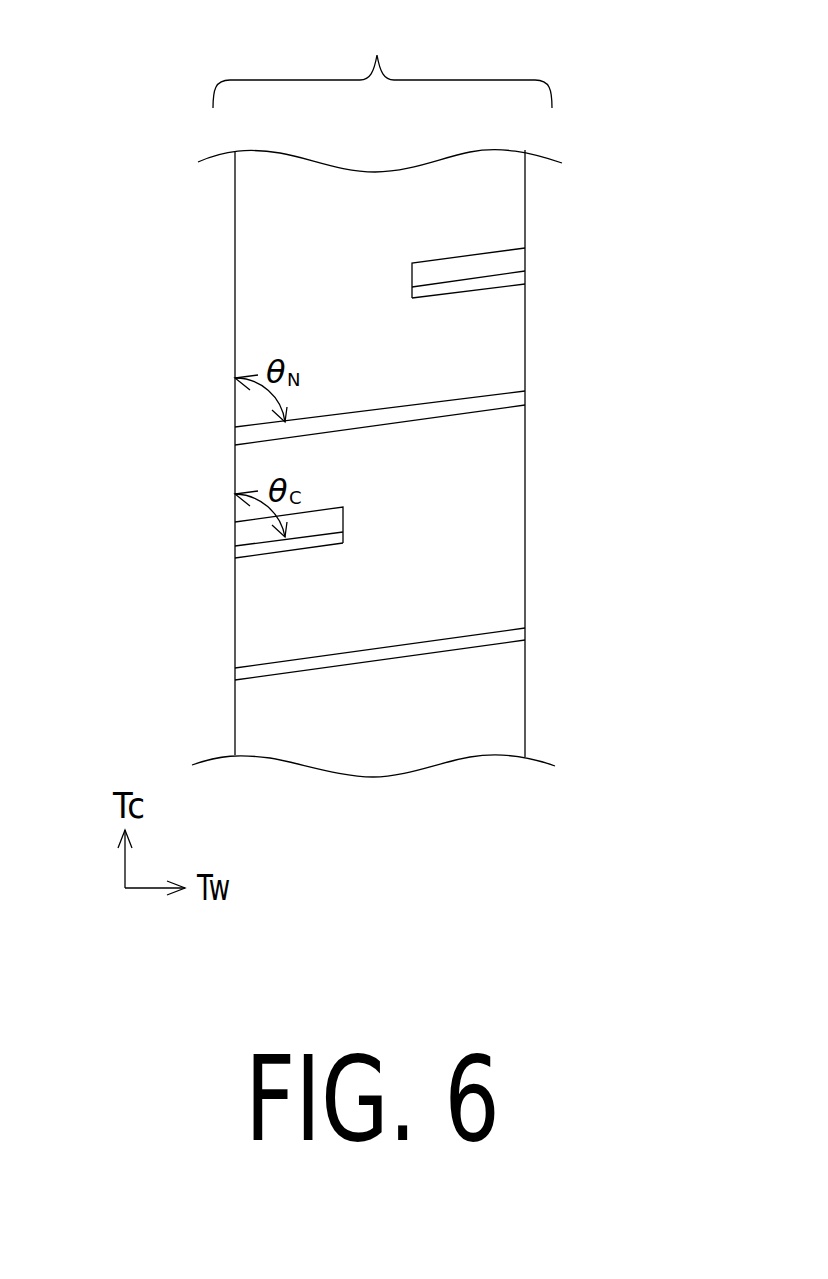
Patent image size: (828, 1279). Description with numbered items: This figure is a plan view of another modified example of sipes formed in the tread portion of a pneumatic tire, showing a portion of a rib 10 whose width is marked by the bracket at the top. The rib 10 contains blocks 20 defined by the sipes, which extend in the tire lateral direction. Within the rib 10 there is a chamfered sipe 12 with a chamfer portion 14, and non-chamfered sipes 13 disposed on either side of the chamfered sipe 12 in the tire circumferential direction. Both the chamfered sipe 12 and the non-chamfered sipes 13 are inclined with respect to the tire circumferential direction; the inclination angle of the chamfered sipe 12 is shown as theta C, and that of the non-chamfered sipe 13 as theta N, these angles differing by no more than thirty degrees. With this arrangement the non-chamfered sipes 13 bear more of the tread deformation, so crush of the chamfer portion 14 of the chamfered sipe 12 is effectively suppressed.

The rib 10 is at (382, 59).
The chamfered sipe 12 is at (490, 280).
The non-chamfered sipe 13 is at (270, 432).
The chamfer portion 14 is at (500, 262).
The block 20 is at (483, 517).